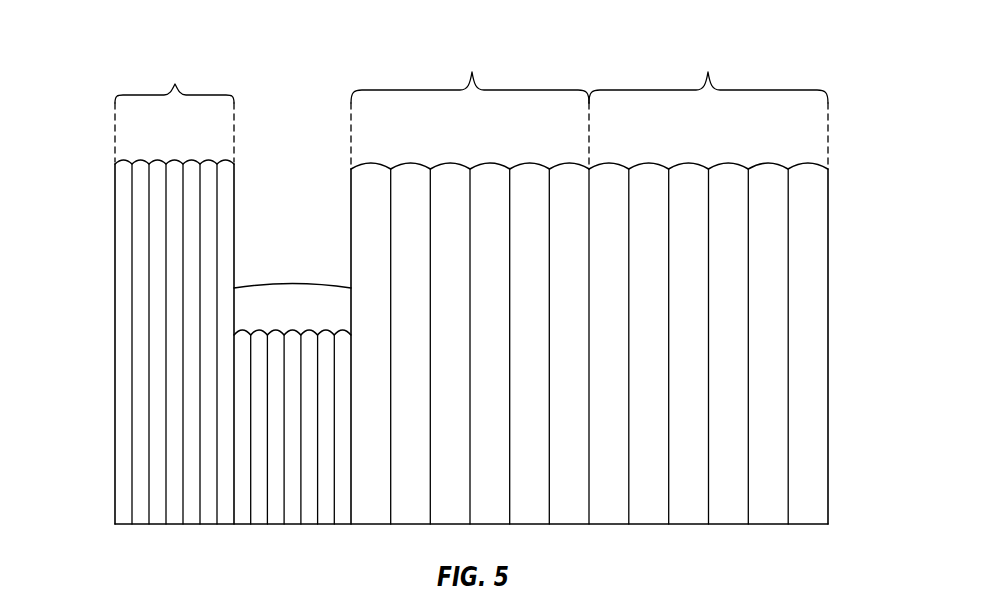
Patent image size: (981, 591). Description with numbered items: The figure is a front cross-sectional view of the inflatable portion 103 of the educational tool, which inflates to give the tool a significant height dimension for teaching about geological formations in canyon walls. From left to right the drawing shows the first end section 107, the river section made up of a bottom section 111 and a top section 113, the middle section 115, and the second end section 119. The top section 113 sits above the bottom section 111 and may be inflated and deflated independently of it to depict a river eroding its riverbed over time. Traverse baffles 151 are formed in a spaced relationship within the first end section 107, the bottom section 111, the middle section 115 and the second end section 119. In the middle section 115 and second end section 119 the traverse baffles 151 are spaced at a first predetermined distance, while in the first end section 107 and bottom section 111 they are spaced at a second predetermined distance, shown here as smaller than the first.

The inflatable portion 103 is at (138, 44).
The first end section 107 is at (174, 291).
The bottom section 111 is at (290, 525).
The top section 113 is at (290, 283).
The middle section 115 is at (470, 284).
The second end section 119 is at (708, 284).
The traverse baffles 151 is at (149, 410).